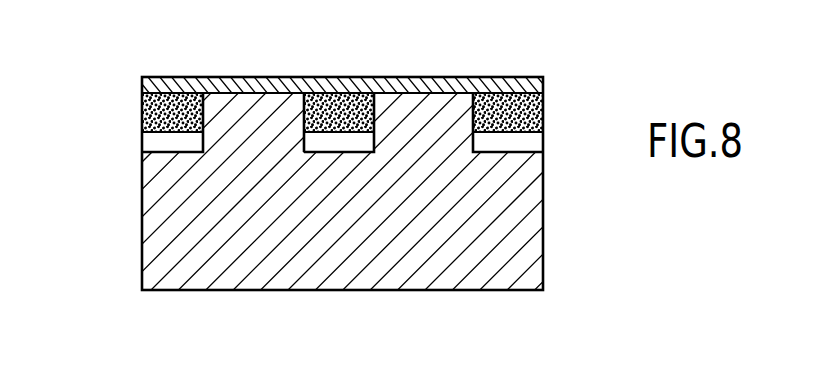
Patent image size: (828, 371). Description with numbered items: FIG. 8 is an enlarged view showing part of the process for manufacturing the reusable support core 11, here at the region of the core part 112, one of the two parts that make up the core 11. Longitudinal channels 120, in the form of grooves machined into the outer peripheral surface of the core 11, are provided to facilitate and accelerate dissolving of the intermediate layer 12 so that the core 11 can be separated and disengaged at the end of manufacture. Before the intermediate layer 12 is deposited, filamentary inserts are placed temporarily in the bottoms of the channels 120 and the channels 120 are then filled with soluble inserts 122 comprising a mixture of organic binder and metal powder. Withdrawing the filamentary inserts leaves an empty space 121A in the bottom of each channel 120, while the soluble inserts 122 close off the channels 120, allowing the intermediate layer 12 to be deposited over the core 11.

The intermediate layer 12 is at (283, 73).
The soluble insert 122 is at (137, 106).
The empty space 121A is at (138, 140).
The core 11 is at (135, 250).
The longitudinal channel 120 is at (549, 143).
The core part 112 is at (535, 251).